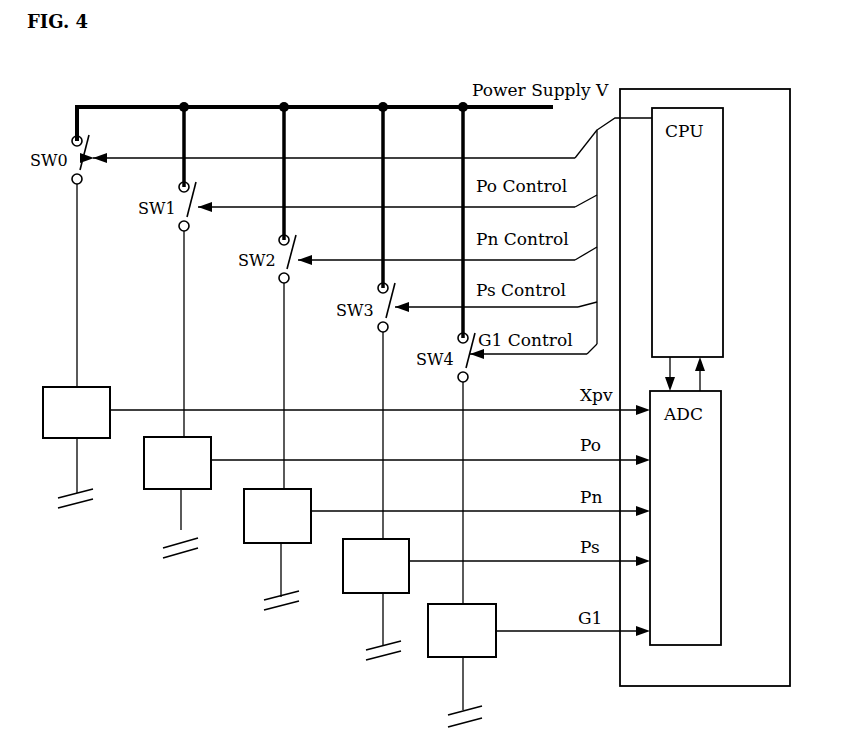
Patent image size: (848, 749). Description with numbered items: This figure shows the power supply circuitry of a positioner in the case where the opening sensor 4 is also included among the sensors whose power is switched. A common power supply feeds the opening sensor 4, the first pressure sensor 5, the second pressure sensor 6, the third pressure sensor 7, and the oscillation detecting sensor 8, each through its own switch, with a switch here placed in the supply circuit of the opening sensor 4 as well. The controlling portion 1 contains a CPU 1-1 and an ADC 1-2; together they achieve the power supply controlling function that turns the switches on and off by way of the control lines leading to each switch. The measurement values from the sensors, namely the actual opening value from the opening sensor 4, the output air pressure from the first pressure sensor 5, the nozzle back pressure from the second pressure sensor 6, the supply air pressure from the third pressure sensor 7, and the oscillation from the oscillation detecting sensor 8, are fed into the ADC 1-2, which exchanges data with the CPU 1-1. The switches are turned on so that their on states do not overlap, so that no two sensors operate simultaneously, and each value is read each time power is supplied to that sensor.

The controlling portion 1 is at (705, 365).
The CPU 1-1 is at (724, 158).
The ADC 1-2 is at (722, 435).
The opening sensor 4 is at (98, 396).
The first pressure sensor 5 is at (200, 460).
The second pressure sensor 6 is at (302, 507).
The third pressure sensor 7 is at (400, 559).
The oscillation detecting sensor 8 is at (494, 609).